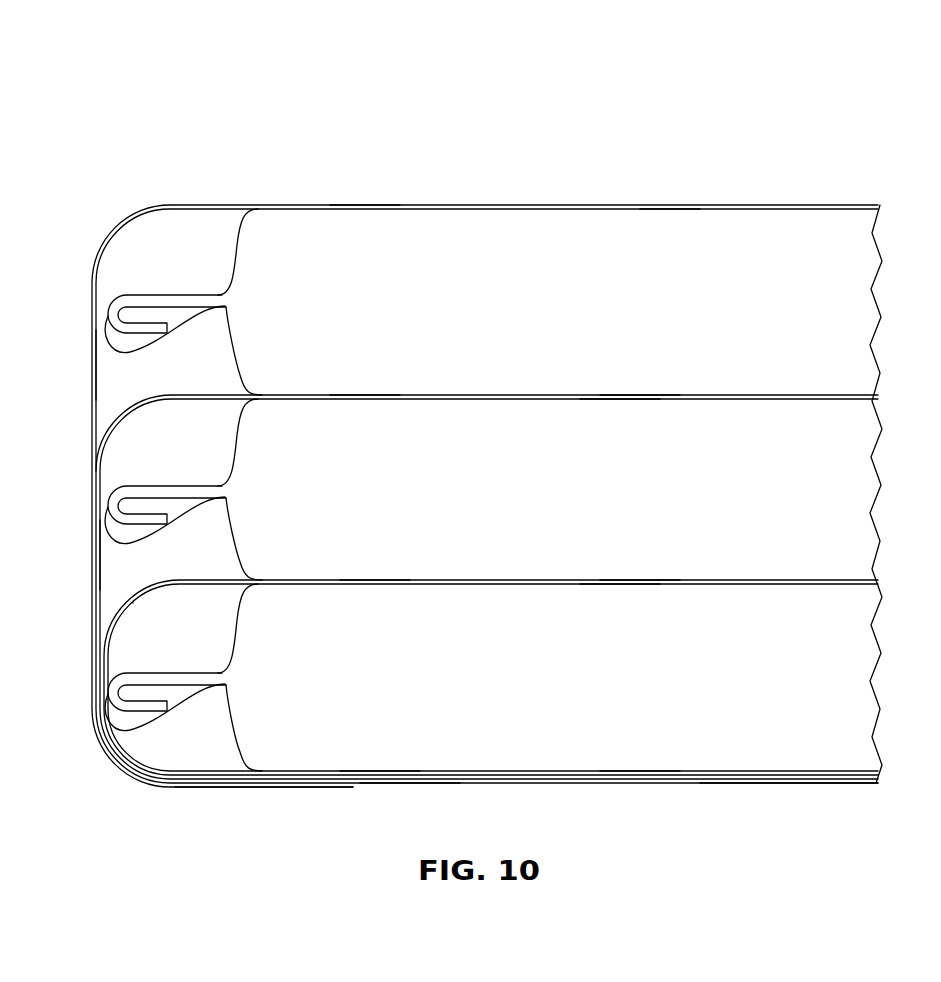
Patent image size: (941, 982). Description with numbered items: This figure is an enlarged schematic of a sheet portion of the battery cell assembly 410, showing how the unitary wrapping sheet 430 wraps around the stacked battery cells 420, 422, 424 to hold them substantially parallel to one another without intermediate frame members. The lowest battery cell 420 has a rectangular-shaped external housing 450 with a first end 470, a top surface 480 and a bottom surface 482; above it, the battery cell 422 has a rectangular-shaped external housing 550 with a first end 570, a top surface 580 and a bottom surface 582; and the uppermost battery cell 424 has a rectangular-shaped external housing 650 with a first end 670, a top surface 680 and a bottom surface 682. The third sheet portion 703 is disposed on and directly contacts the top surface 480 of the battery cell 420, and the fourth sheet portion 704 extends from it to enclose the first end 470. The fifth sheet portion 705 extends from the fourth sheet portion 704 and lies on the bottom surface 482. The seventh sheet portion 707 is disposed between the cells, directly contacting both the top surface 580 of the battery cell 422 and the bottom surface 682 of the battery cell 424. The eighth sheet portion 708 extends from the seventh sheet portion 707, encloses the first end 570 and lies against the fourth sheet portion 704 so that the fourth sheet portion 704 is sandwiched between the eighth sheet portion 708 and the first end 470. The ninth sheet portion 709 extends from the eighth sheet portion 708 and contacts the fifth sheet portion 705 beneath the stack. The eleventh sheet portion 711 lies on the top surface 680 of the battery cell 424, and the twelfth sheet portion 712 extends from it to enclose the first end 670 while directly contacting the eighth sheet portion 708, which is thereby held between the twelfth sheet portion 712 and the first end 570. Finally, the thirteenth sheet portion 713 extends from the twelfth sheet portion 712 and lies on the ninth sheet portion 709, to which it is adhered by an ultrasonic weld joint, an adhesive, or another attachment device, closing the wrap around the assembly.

The battery cell assembly 410 is at (584, 136).
The unitary wrapping sheet 430 is at (735, 205).
The eleventh sheet portion 711 is at (360, 205).
The top surface 680 is at (670, 209).
The battery cell 424 is at (578, 314).
The first end 670 is at (225, 306).
The twelfth sheet portion 712 is at (96, 382).
The seventh sheet portion 707 is at (362, 395).
The bottom surface 682 is at (640, 395).
The top surface 580 is at (605, 399).
The rectangular-shaped external housing 650 is at (760, 363).
The battery cell 422 is at (578, 499).
The first end 570 is at (225, 497).
The eighth sheet portion 708 is at (100, 572).
The third sheet portion 703 is at (368, 580).
The bottom surface 582 is at (640, 580).
The top surface 480 is at (605, 584).
The rectangular-shaped external housing 550 is at (760, 548).
The fourth sheet portion 704 is at (133, 603).
The battery cell 420 is at (578, 684).
The first end 470 is at (225, 684).
The fifth sheet portion 705 is at (370, 771).
The bottom surface 482 is at (640, 771).
The thirteenth sheet portion 713 is at (262, 788).
The ninth sheet portion 709 is at (405, 784).
The rectangular-shaped external housing 450 is at (760, 740).